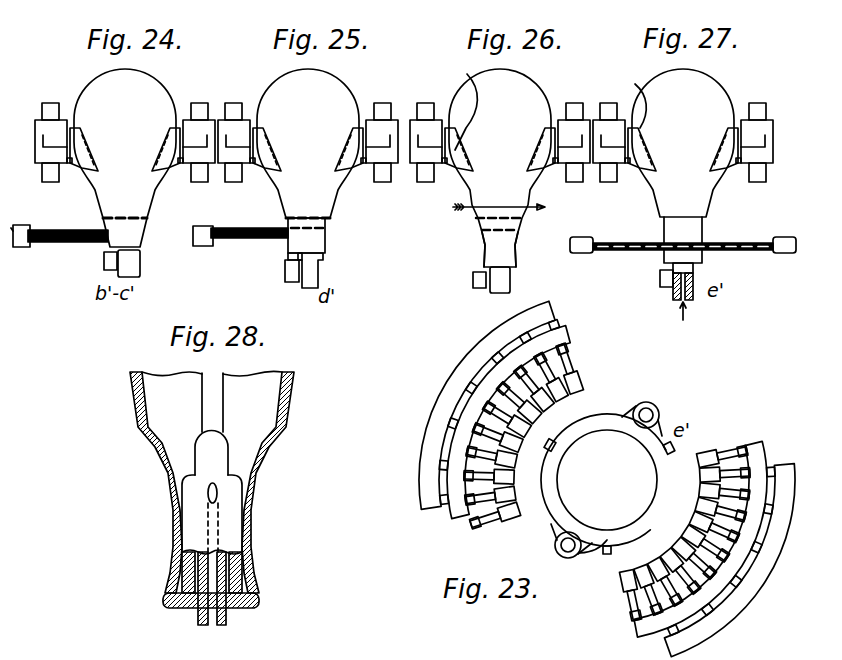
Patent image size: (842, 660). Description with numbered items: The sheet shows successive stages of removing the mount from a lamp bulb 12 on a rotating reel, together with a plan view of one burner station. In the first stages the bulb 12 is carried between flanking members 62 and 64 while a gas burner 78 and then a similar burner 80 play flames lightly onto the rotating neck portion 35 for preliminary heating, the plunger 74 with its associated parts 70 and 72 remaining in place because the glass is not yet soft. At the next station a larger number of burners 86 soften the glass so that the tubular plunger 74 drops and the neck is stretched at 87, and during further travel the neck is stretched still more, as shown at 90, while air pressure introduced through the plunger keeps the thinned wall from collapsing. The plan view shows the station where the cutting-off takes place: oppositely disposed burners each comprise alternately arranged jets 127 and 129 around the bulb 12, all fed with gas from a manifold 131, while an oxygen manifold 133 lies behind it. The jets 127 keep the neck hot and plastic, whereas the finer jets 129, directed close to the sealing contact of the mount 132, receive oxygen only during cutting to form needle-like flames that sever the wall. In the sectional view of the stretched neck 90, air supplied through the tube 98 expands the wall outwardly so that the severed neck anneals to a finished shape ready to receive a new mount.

In FIG. 24, the lamp bulb 12 is at (125, 158).
In FIG. 25, the lamp bulb 12 is at (308, 143).
In FIG. 26, the lamp bulb 12 is at (500, 168).
In FIG. 27, the lamp bulb 12 is at (683, 143).
In FIG. 28, the lamp bulb 12 is at (276, 372).
In FIG. 23, the lamp bulb 12 is at (608, 484).
In FIG. 24, the clamping jaw 62 is at (64, 128).
In FIG. 25, the clamping jaw 62 is at (247, 129).
In FIG. 26, the clamping jaw 62 is at (435, 128).
In FIG. 27, the clamping jaw 62 is at (620, 126).
In FIG. 23, the clamping jaw 62 is at (649, 404).
In FIG. 24, the clamping jaw 64 is at (183, 128).
In FIG. 25, the clamping jaw 64 is at (295, 127).
In FIG. 26, the clamping jaw 64 is at (517, 125).
In FIG. 27, the clamping jaw 64 is at (701, 123).
In FIG. 23, the clamping jaw 64 is at (606, 548).
In FIG. 24, the neck portion 35 is at (128, 202).
In FIG. 24, the gas burner 78 is at (59, 222).
In FIG. 27, the gas burner 78 is at (683, 245).
In FIG. 24, the burner 80 is at (59, 222).
In FIG. 27, the burner 80 is at (683, 245).
In FIG. 24, the contact support 72 is at (95, 258).
In FIG. 25, the contact support 72 is at (275, 273).
In FIG. 26, the contact support 72 is at (464, 284).
In FIG. 27, the contact support 72 is at (649, 283).
In FIG. 24, the tubular plunger 74 is at (148, 263).
In FIG. 25, the tubular plunger 74 is at (328, 270).
In FIG. 26, the tubular plunger 74 is at (522, 280).
In FIG. 27, the tubular plunger 74 is at (704, 273).
In FIG. 25, the burners 86 is at (240, 224).
In FIG. 25, the stretched neck portion 87 is at (328, 235).
In FIG. 25, the contact piece 70 is at (277, 253).
In FIG. 26, the stretched and softened portion 90 is at (489, 249).
In FIG. 27, the stretched and softened portion 90 is at (683, 245).
In FIG. 28, the stretched and softened portion 90 is at (173, 531).
In FIG. 27, the tube 98 is at (703, 302).
In FIG. 28, the mount 132 is at (184, 487).
In FIG. 23, the jets 127 is at (600, 394).
In FIG. 23, the finer jets 129 is at (522, 490).
In FIG. 23, the gas manifold 131 is at (452, 524).
In FIG. 23, the oxygen manifold 133 is at (421, 475).